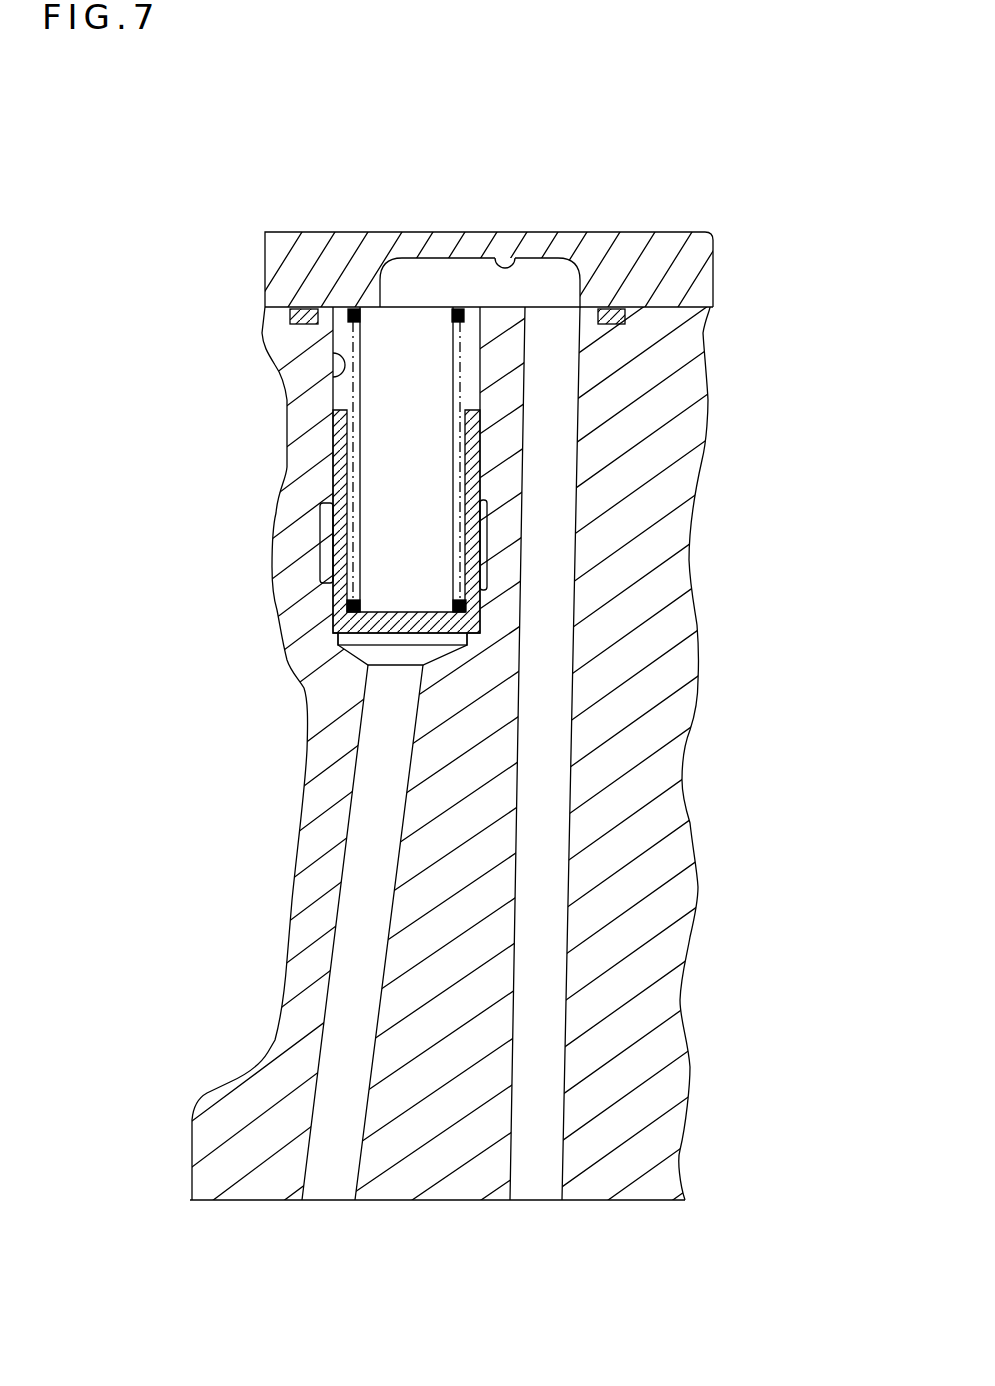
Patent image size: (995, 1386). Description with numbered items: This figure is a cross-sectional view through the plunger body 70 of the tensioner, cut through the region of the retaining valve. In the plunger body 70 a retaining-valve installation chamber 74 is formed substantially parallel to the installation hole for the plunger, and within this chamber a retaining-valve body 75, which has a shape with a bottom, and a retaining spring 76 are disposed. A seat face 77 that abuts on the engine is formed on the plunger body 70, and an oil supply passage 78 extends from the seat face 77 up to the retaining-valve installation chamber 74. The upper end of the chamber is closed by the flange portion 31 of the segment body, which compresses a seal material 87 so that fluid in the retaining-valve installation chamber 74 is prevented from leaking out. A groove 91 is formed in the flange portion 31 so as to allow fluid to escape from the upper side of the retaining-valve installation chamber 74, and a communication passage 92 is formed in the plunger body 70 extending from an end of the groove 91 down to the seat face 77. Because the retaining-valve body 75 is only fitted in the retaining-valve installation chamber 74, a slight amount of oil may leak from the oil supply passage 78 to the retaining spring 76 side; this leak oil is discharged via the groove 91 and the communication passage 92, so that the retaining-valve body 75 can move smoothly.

The flange portion 31 is at (645, 233).
The plunger body 70 is at (678, 885).
The retaining-valve installation chamber 74 is at (345, 378).
The retaining-valve body 75 is at (325, 553).
The retaining spring 76 is at (360, 415).
The seat face 77 is at (255, 1200).
The oil supply passage 78 is at (348, 914).
The seal material 87 is at (610, 325).
The groove 91 is at (505, 262).
The communication passage 92 is at (540, 1200).